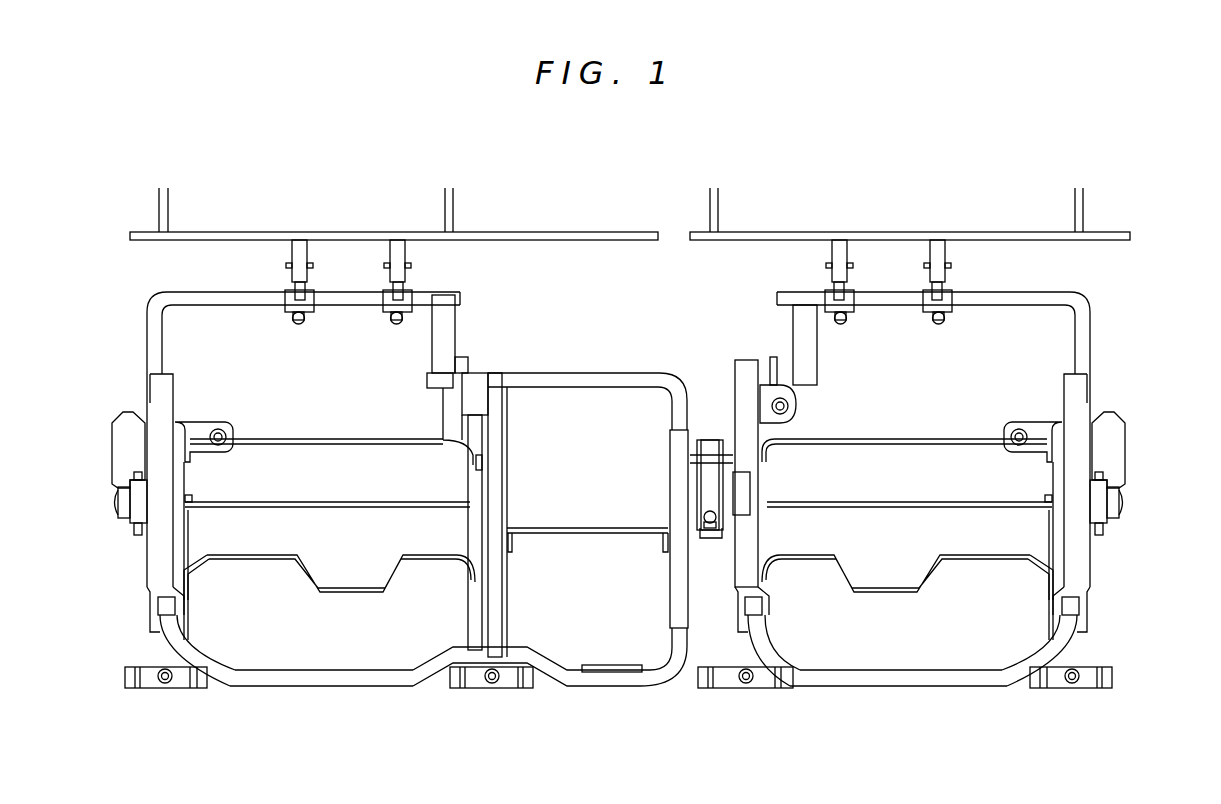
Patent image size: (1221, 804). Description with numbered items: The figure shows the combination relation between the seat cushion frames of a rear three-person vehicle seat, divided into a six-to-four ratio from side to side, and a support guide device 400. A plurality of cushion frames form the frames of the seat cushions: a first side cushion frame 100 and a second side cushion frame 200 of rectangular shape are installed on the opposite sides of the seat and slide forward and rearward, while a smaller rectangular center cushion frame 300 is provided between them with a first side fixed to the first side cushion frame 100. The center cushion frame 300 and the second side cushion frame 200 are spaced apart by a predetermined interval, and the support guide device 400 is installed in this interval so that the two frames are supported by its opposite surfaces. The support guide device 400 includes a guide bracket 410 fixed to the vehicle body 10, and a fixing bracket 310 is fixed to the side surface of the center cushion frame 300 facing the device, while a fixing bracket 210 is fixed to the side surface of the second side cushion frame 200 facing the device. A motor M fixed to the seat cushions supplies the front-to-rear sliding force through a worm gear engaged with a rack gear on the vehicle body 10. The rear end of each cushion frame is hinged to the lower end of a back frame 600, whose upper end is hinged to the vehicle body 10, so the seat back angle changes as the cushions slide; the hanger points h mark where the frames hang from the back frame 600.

The vehicle body 10 is at (609, 291).
The first side cushion frame 100 is at (323, 700).
The second side cushion frame 200 is at (905, 506).
The fixing bracket 210 is at (750, 528).
The center cushion frame 300 is at (550, 573).
The fixing bracket 310 is at (672, 580).
The support guide device 400 is at (671, 434).
The guide bracket 410 is at (703, 486).
The back frame 600 is at (503, 222).
The hanger clip h is at (286, 266).
The motor M is at (120, 458).